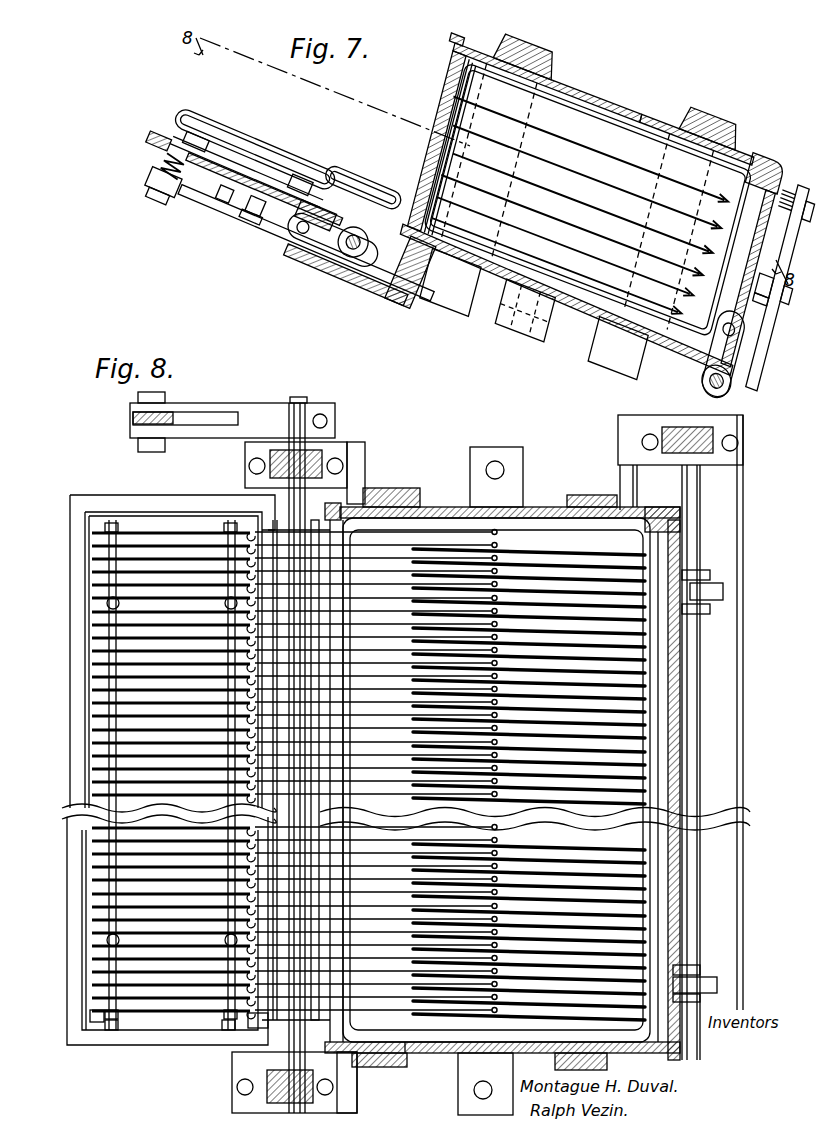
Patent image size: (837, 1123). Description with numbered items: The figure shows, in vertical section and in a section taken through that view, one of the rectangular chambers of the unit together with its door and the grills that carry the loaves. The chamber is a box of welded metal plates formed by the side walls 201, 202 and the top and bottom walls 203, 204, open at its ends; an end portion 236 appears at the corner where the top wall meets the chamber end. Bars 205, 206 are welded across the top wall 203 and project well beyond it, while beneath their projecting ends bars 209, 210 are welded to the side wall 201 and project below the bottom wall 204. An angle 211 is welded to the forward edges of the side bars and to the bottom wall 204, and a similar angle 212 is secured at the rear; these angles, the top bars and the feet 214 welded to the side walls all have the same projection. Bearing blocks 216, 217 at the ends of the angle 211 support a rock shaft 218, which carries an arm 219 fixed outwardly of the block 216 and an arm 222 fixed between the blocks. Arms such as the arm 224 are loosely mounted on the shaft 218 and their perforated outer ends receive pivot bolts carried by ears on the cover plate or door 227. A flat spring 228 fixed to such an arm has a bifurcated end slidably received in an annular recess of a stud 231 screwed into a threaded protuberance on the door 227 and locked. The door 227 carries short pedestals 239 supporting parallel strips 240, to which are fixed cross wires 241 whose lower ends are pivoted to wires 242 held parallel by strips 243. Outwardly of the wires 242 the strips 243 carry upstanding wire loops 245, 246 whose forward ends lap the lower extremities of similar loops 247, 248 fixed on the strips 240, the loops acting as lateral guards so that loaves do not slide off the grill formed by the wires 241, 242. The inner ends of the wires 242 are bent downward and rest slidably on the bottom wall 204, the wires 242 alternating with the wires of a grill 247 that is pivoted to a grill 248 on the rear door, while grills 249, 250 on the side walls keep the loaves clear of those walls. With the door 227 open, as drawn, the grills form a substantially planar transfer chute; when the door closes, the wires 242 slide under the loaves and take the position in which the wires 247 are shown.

In FIG. 7, the side wall 201 is at (585, 100).
In FIG. 8, the side wall 201 is at (545, 512).
In FIG. 8, the side wall 202 is at (487, 764).
In FIG. 7, the top wall 203 is at (642, 121).
In FIG. 7, the bottom wall 204 is at (592, 310).
In FIG. 7, the bar 205 is at (530, 52).
In FIG. 7, the bar 206 is at (712, 128).
In FIG. 7, the bar 209 is at (440, 292).
In FIG. 7, the bar 210 is at (622, 360).
In FIG. 8, the bar 210 is at (590, 492).
In FIG. 7, the angle 211 is at (365, 262).
In FIG. 8, the angle 211 is at (262, 1075).
In FIG. 7, the angle 212 is at (740, 404).
In FIG. 7, the foot 214 is at (515, 330).
In FIG. 7, the bearing block 216 is at (350, 288).
In FIG. 8, the bearing block 216 is at (265, 466).
In FIG. 8, the bearing block 217 is at (240, 1083).
In FIG. 8, the rock shaft 218 is at (303, 397).
In FIG. 8, the arm 219 is at (226, 408).
In FIG. 7, the arm 222 is at (210, 205).
In FIG. 7, the arm 224 is at (316, 258).
In FIG. 7, the cover plate or door 227 is at (150, 146).
In FIG. 8, the cover plate or door 227 is at (125, 1078).
In FIG. 7, the flat spring 228 is at (280, 234).
In FIG. 8, the flat spring 228 is at (715, 585).
In FIG. 7, the stud 231 is at (245, 232).
In FIG. 8, the stud 231 is at (722, 598).
In FIG. 7, the end wall 236 is at (458, 42).
In FIG. 7, the short pedestal 239 is at (172, 132).
In FIG. 8, the short pedestal 239 is at (98, 600).
In FIG. 8, the parallel strip 240 is at (105, 1030).
In FIG. 8, the cross wire 241 is at (92, 910).
In FIG. 7, the wire 242 is at (482, 228).
In FIG. 8, the wire 242 is at (368, 600).
In FIG. 7, the strip 243 is at (340, 186).
In FIG. 7, the wire loop 245 is at (372, 178).
In FIG. 8, the wire loop 245 is at (268, 520).
In FIG. 8, the wire loop 246 is at (265, 1028).
In FIG. 7, the wire loop / grill 247 is at (270, 148).
In FIG. 8, the wire loop / grill 247 is at (150, 528).
In FIG. 7, the wire loop / grill 248 is at (712, 268).
In FIG. 8, the wire loop / grill 248 is at (85, 1007).
In FIG. 8, the grill 249 is at (430, 528).
In FIG. 8, the grill 250 is at (413, 1062).